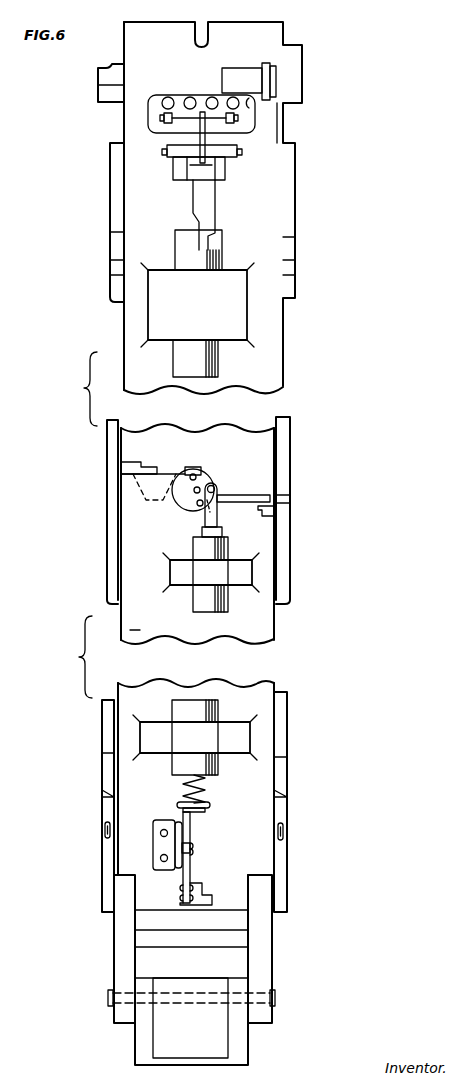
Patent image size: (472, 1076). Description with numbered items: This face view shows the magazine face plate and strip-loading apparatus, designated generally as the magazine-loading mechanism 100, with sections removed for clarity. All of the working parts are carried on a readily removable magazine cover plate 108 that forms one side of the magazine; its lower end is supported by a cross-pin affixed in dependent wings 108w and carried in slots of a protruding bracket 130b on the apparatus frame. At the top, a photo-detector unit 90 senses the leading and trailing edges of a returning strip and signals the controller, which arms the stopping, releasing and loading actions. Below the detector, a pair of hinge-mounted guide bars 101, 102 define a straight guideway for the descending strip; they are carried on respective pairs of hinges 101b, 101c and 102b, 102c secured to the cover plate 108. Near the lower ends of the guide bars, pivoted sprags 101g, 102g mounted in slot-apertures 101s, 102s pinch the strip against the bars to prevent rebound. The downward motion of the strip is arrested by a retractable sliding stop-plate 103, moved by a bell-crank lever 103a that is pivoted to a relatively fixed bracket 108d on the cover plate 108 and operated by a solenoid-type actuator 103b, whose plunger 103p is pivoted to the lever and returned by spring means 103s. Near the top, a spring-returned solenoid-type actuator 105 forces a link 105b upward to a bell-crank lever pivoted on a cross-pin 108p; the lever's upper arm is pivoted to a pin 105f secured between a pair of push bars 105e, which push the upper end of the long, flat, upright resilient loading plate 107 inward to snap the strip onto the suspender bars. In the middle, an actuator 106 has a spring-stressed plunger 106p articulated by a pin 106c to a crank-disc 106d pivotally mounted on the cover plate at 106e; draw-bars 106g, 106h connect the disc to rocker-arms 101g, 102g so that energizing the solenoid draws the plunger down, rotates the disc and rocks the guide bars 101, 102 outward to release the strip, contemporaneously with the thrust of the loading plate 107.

The photo-detector unit 90 is at (252, 80).
The magazine-loading mechanism 100 is at (324, 577).
The guide bar 101 is at (116, 490).
The hinge 101b is at (117, 254).
The hinge 101c is at (116, 793).
The sprag / rocker-arm 101g is at (119, 474).
The slot-aperture 101s is at (108, 836).
The guide bar 102 is at (282, 463).
The hinge 102b is at (288, 258).
The hinge 102c is at (288, 792).
The sprag / rocker-arm 102g is at (278, 502).
The slot-aperture 102s is at (286, 838).
The stop-plate 103 is at (142, 922).
The bell-crank lever 103a is at (192, 868).
The solenoid-type actuator 103b is at (181, 707).
The plunger 103p is at (200, 823).
The spring means 103s is at (205, 787).
The solenoid-type actuator 105 is at (180, 362).
The link 105b is at (200, 195).
The push bars 105e is at (282, 113).
The pin 105f is at (163, 152).
The solenoid-type actuator 106 is at (200, 600).
The pin 106c is at (210, 483).
The crank-disc 106d is at (212, 483).
The pivot 106e is at (187, 500).
The draw-bar 106g is at (167, 478).
The draw-bar 106h is at (238, 527).
The plunger 106p is at (203, 530).
The loading plate 107 is at (173, 130).
The magazine cover plate 108 is at (258, 627).
The bracket 108d is at (158, 845).
The cross-pin 108p is at (178, 1000).
The wings 108w is at (263, 950).
The bracket 130b is at (240, 1057).